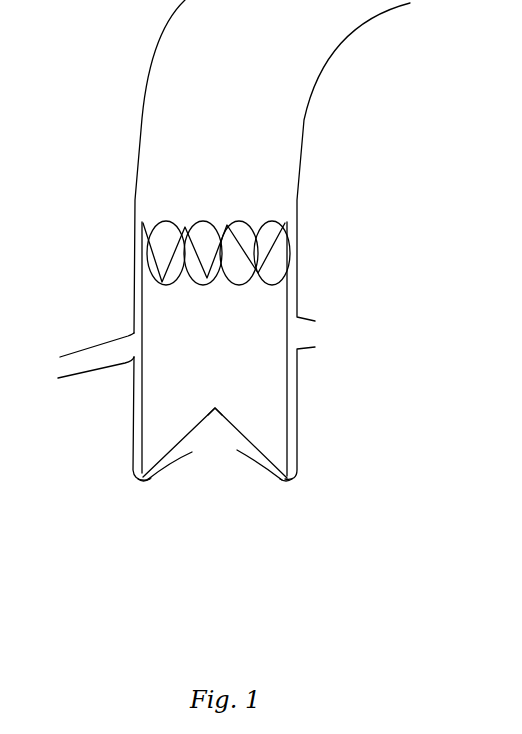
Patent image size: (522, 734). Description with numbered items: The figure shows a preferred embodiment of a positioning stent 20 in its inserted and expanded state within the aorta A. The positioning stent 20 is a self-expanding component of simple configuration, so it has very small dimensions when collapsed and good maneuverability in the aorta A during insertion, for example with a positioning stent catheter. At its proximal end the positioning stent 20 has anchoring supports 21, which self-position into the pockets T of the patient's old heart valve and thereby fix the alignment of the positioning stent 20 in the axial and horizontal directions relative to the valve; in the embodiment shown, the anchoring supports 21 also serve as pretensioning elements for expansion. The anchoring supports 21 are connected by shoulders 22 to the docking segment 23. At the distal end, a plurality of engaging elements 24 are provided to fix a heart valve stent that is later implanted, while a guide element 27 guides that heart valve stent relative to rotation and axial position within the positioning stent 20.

The aorta A is at (300, 165).
The positioning stent 20 is at (316, 220).
The engaging elements 24 is at (112, 212).
The guide element 27 is at (187, 223).
The anchoring supports 21 is at (119, 402).
The docking segment 23 is at (215, 408).
The shoulders 22 is at (147, 481).
The pockets T is at (282, 482).